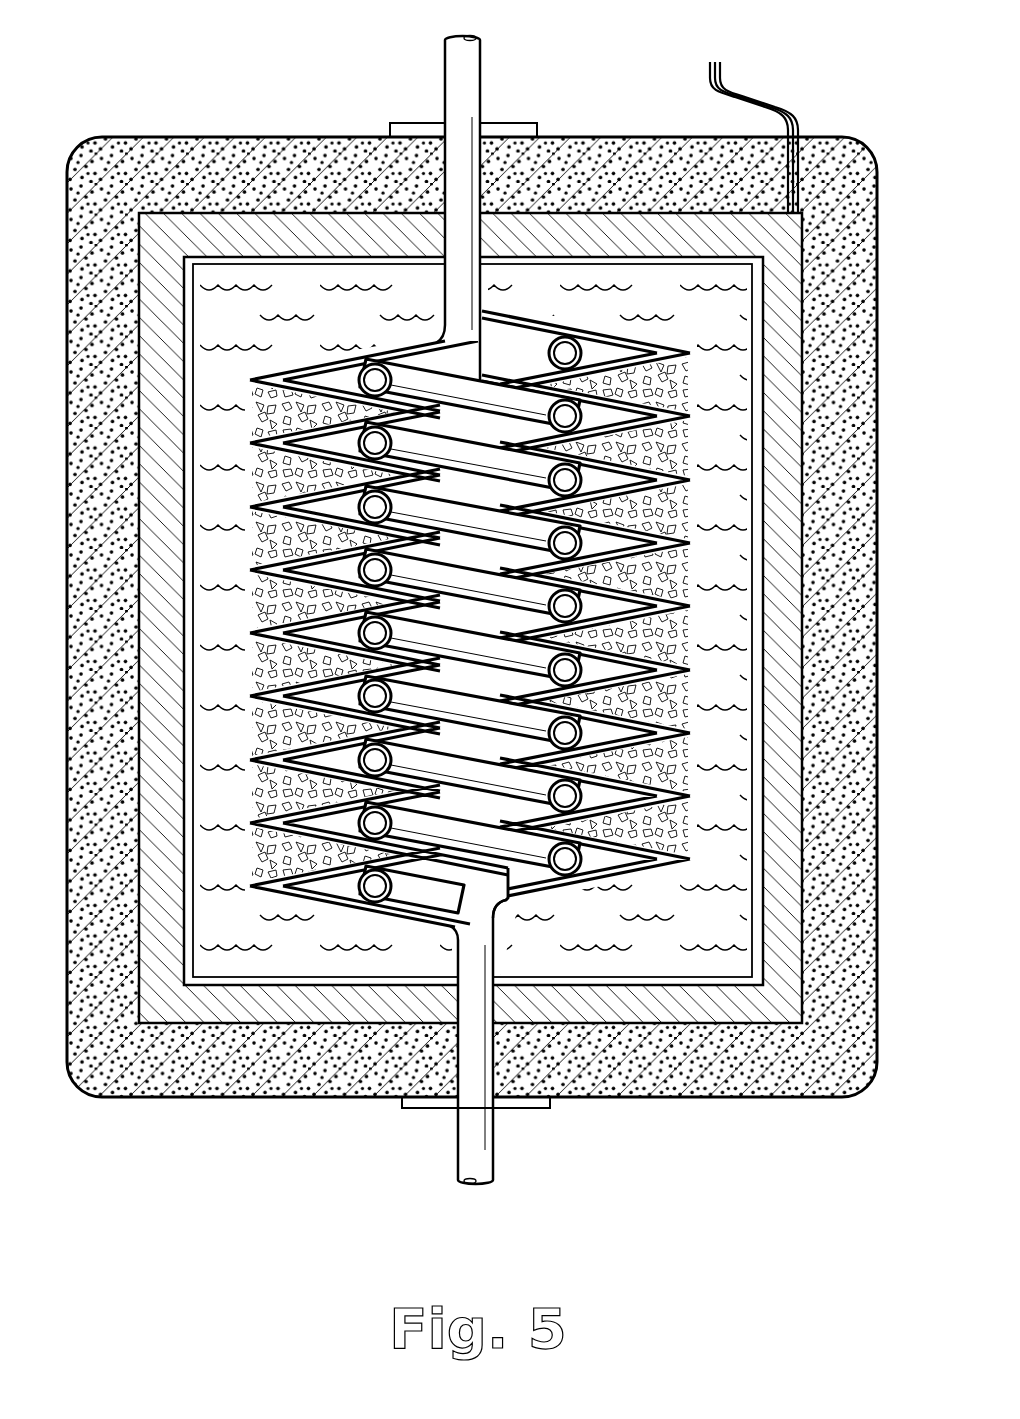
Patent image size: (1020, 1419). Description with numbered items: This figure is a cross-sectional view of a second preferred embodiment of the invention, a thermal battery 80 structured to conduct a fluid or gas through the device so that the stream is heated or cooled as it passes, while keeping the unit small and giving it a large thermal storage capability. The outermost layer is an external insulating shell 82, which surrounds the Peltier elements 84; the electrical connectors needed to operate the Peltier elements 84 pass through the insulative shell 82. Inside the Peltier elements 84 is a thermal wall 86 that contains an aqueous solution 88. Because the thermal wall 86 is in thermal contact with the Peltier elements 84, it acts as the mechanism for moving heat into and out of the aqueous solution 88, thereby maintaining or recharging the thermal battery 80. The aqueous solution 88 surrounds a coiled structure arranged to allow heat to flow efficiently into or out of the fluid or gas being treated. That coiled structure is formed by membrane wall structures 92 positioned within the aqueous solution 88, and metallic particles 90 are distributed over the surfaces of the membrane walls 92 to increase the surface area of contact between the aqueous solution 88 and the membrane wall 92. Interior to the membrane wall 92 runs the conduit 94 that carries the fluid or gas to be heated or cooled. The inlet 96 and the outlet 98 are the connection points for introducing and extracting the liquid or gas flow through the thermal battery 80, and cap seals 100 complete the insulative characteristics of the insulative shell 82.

The thermal battery 80 is at (503, 619).
The external insulating shell 82 is at (597, 138).
The Peltier elements 84 is at (283, 247).
The thermal wall 86 is at (195, 320).
The aqueous solution 88 is at (707, 324).
The metallic particles 90 is at (680, 363).
The membrane wall structures 92 is at (594, 619).
The conduit 94 is at (512, 870).
The inlet 96 is at (480, 77).
The outlet 98 is at (488, 1133).
The cap seals 100 is at (433, 1113).